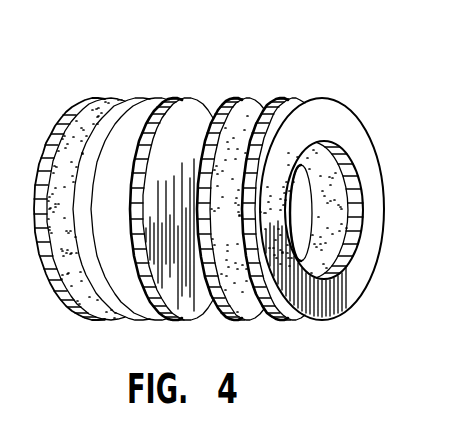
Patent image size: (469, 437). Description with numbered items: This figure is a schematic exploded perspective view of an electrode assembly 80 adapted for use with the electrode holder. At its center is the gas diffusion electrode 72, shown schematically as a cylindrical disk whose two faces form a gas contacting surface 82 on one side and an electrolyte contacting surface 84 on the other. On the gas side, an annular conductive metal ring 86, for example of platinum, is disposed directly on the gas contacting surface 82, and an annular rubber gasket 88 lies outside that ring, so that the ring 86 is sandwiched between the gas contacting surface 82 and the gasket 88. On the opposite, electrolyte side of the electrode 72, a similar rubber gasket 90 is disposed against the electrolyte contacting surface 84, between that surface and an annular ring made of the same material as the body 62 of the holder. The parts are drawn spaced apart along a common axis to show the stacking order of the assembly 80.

The body 62 is at (362, 150).
The gas diffusion electrode 72 is at (208, 110).
The electrode assembly 80 is at (285, 62).
The gas contacting surface 82 is at (165, 100).
The electrolyte contacting surface 84 is at (196, 167).
The annular conductive metal ring 86 is at (148, 110).
The annular rubber gasket 88 is at (107, 110).
The rubber gasket 90 is at (276, 100).